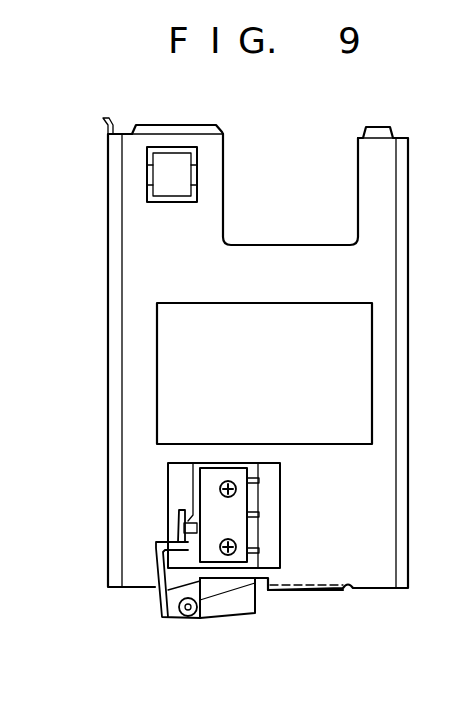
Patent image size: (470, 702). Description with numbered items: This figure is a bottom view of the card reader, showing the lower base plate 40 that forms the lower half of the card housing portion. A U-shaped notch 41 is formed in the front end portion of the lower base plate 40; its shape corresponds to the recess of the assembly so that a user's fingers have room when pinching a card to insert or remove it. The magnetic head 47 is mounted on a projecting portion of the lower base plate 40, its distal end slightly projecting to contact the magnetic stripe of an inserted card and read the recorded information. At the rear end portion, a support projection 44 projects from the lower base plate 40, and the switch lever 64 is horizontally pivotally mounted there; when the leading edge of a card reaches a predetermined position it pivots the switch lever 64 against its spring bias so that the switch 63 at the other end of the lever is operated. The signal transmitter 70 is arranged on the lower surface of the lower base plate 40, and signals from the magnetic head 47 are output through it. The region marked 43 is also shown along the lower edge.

The lower base plate 40 is at (388, 240).
The U-shaped notch 41 is at (283, 245).
The bottom edge / slit 43 is at (310, 592).
The support projection 44 is at (180, 617).
The magnetic head 47 is at (166, 150).
The switch 63 is at (193, 487).
The switch lever 64 is at (236, 613).
The signal transmitter 70 is at (362, 351).